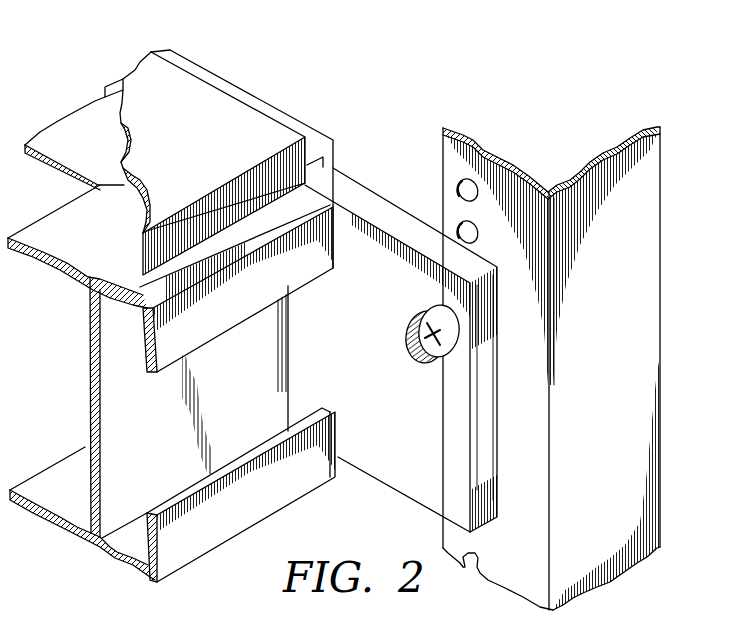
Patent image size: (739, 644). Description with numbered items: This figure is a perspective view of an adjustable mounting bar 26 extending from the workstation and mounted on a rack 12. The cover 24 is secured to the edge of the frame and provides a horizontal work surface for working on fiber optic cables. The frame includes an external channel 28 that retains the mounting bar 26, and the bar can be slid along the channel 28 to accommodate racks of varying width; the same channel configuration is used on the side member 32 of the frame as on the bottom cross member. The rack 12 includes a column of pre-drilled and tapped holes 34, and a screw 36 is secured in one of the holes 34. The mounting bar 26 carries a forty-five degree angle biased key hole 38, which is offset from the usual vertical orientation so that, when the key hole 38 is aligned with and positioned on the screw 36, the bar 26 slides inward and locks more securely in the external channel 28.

The rack 12 is at (663, 283).
The cover 24 is at (211, 151).
The mounting bar 26 is at (428, 450).
The external channel 28 is at (260, 305).
The side member 32 is at (110, 405).
The hole 34 is at (460, 191).
The screw 36 is at (422, 312).
The forty-five degree angle biased key hole 38 is at (412, 348).